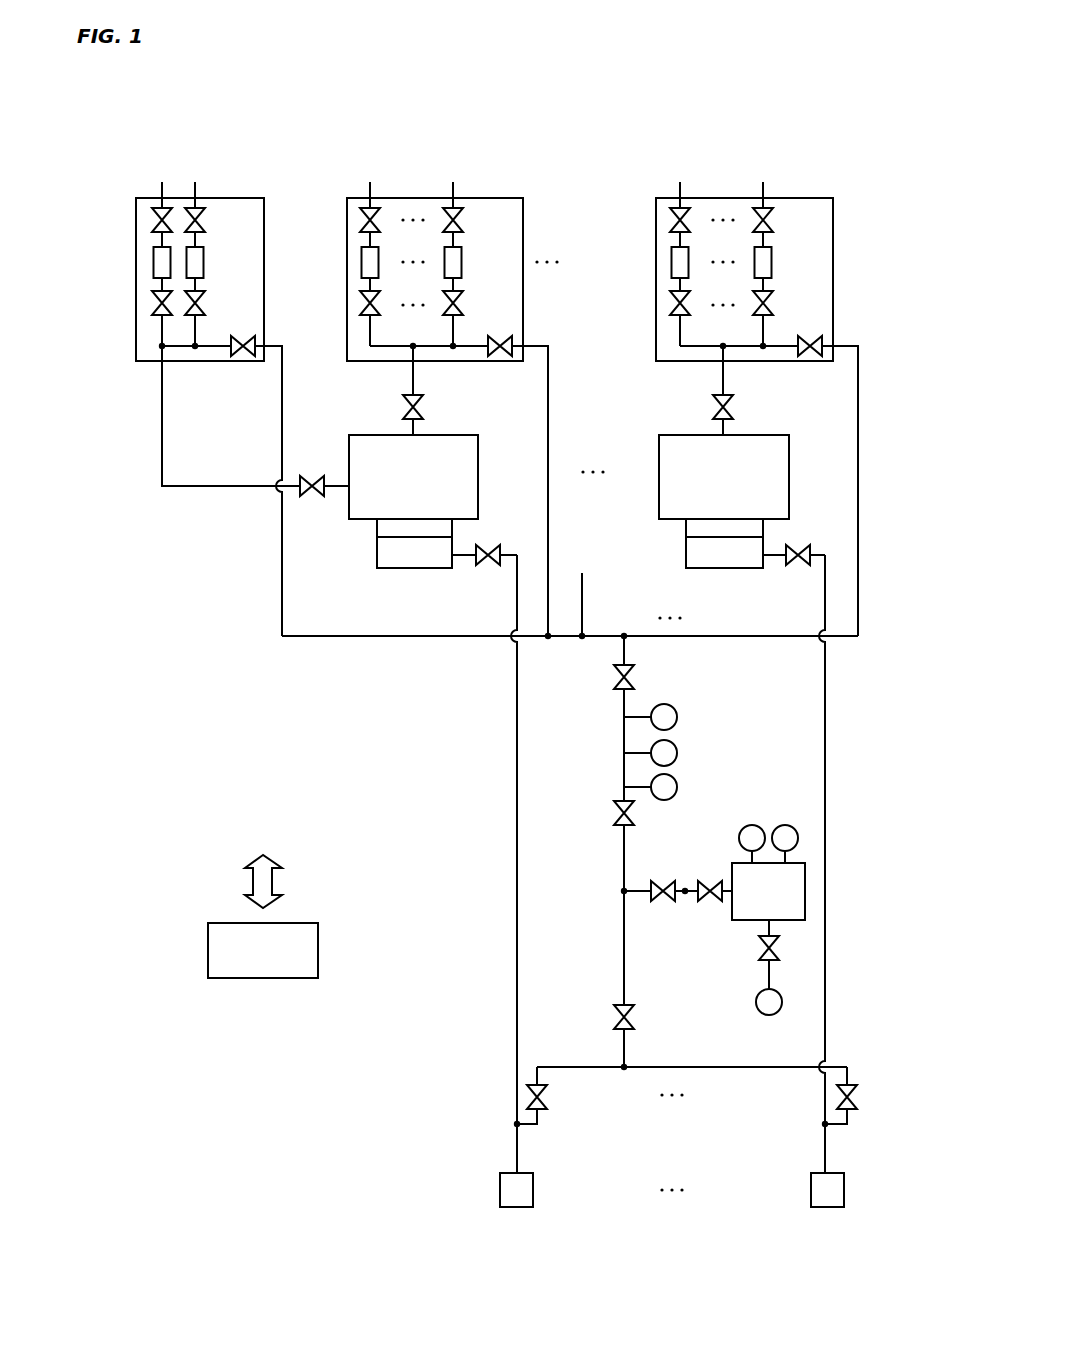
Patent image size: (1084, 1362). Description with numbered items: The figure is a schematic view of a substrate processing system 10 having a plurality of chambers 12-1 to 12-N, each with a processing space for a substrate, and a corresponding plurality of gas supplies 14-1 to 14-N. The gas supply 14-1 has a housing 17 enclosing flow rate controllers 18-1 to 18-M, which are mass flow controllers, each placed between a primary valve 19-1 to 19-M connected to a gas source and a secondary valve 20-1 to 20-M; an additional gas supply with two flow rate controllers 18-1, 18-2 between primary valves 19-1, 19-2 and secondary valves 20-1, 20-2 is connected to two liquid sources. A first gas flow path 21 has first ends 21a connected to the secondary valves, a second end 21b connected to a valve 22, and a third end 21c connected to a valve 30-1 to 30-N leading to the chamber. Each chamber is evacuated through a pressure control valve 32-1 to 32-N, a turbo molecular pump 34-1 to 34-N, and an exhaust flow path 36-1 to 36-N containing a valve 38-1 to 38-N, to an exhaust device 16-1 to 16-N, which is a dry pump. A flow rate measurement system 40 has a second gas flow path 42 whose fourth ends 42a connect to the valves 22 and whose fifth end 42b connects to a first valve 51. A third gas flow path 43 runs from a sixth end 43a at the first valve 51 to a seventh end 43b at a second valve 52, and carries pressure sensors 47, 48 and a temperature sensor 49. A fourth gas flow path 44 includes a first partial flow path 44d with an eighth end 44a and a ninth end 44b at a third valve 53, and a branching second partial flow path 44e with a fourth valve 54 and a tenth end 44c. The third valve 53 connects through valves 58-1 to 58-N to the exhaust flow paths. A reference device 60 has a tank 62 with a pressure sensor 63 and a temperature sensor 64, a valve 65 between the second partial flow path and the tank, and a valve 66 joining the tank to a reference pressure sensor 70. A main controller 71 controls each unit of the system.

The substrate processing system 10 is at (808, 86).
The chamber 12-1 is at (479, 488).
The chamber 12-N is at (790, 488).
The gas supply 14-1 is at (534, 146).
The gas supply 14-N is at (846, 146).
The exhaust device 16-1 is at (500, 1194).
The exhaust device 16-N is at (811, 1194).
The housing 17 is at (242, 198).
The flow rate controller 18-1 is at (153, 262).
The flow rate controller 18-2 is at (238, 252).
The flow rate controller 18-M is at (492, 252).
The primary valve 19-1 is at (152, 220).
The primary valve 19-2 is at (200, 216).
The primary valve 19-M is at (461, 214).
The secondary valve 20-1 is at (360, 302).
The secondary valve 20-2 is at (152, 303).
The secondary valve 20-M is at (493, 302).
The first gas flow path 21 is at (178, 349).
The first ends 21a is at (160, 317).
The second end 21b is at (227, 349).
The third end 21c is at (298, 483).
The valve 22 is at (242, 357).
The valve 30-1 is at (423, 408).
The valve 30-N is at (733, 408).
The pressure control valve 32-1 is at (376, 528).
The pressure control valve 32-N is at (685, 528).
The turbo molecular pump 34-1 is at (400, 568).
The turbo molecular pump 34-N is at (709, 568).
The exhaust flow path 36-1 is at (515, 708).
The exhaust flow path 36-N is at (828, 760).
The valve 38-1 is at (486, 567).
The valve 38-N is at (796, 567).
The flow rate measurement system 40 is at (564, 764).
The second gas flow path 42 is at (778, 638).
The fourth ends 42a is at (272, 351).
The fifth end 42b is at (618, 662).
The third gas flow path 43 is at (622, 728).
The sixth end 43a is at (618, 692).
The seventh end 43b is at (618, 798).
The fourth gas flow path 44 is at (565, 830).
The eighth end 44a is at (628, 837).
The ninth end 44b is at (618, 1004).
The tenth end 44c is at (685, 897).
The first partial flow path 44d is at (622, 843).
The second partial flow path 44e is at (622, 891).
The pressure sensor 47 is at (678, 716).
The pressure sensor 48 is at (678, 752).
The temperature sensor 49 is at (678, 786).
The first valve 51 is at (632, 669).
The second valve 52 is at (636, 813).
The third valve 53 is at (635, 1008).
The fourth valve 54 is at (663, 900).
The valve 58-1 is at (545, 1105).
The valve 58-N is at (855, 1105).
The reference device 60 is at (807, 905).
The tank 62 is at (806, 880).
The pressure sensor 63 is at (753, 825).
The temperature sensor 64 is at (791, 825).
The valve 65 is at (710, 900).
The valve 66 is at (777, 946).
The reference pressure sensor 70 is at (777, 1008).
The main controller 71 is at (264, 978).